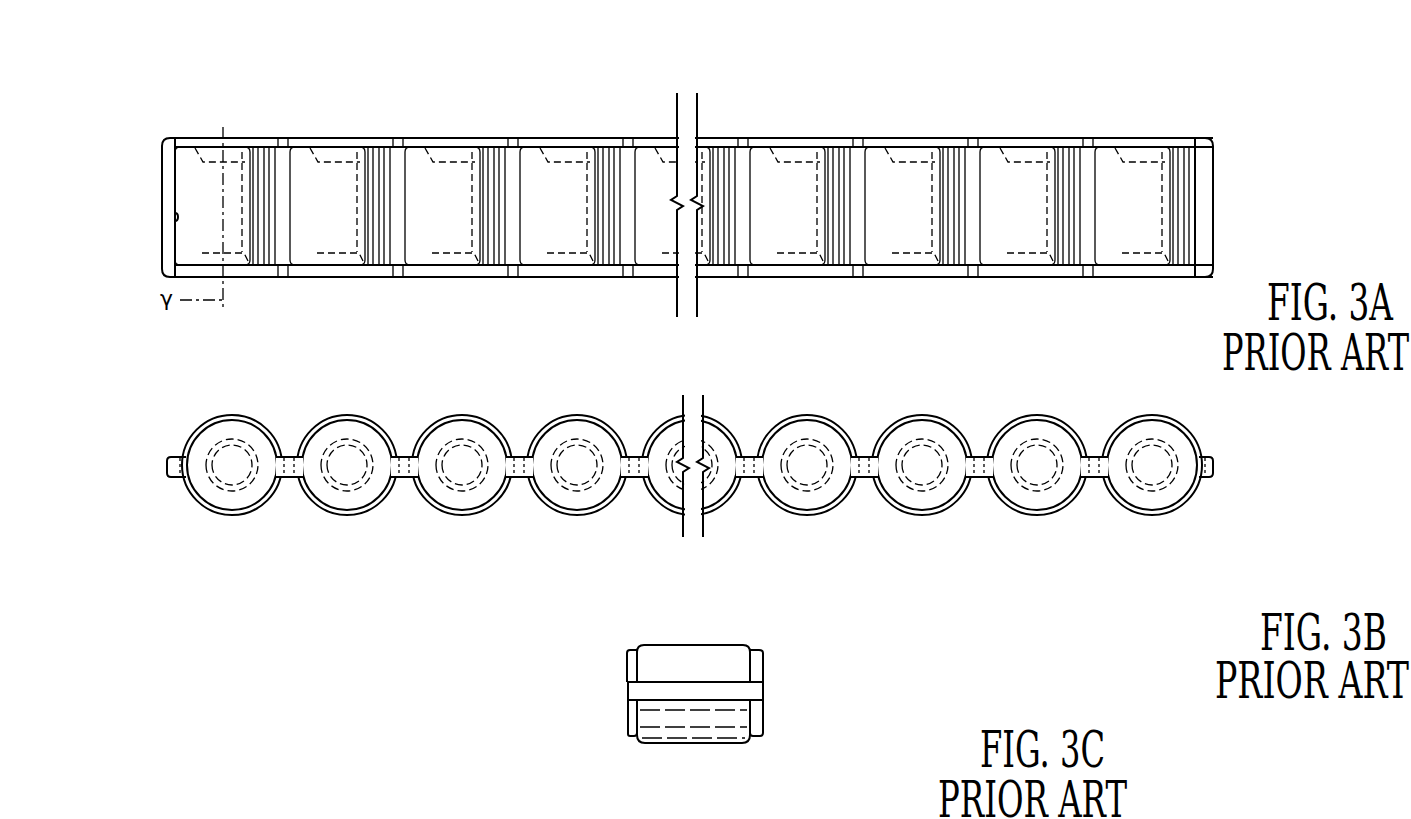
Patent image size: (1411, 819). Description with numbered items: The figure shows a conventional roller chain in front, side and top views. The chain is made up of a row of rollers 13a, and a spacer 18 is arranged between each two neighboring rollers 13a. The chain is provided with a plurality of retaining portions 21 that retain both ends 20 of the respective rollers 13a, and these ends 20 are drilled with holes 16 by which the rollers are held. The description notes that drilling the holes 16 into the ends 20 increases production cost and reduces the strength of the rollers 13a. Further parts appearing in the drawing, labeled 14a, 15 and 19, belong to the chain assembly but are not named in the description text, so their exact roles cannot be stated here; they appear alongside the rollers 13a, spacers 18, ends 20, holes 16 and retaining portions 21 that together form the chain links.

In FIG. 3A, the roller 13a is at (711, 114).
In FIG. 3B, the roller 13a is at (957, 412).
In FIG. 3A, the sleeve 14a is at (190, 152).
In FIG. 3B, the sleeve 14a is at (388, 432).
In FIG. 3C, the sleeve 14a is at (745, 663).
In FIG. 3A, the link 15 is at (520, 140).
In FIG. 3B, the link 15 is at (178, 480).
In FIG. 3C, the link 15 is at (735, 690).
In FIG. 3A, the hole 16 is at (458, 150).
In FIG. 3A, the spacer 18 is at (748, 228).
In FIG. 3B, the spacer 18 is at (410, 480).
In FIG. 3A, the link plate 19 is at (178, 222).
In FIG. 3A, the end of the roller 20 is at (255, 143).
In FIG. 3B, the end of the roller 20 is at (325, 495).
In FIG. 3C, the end of the roller 20 is at (628, 668).
In FIG. 3A, the retaining portion 21 is at (583, 150).